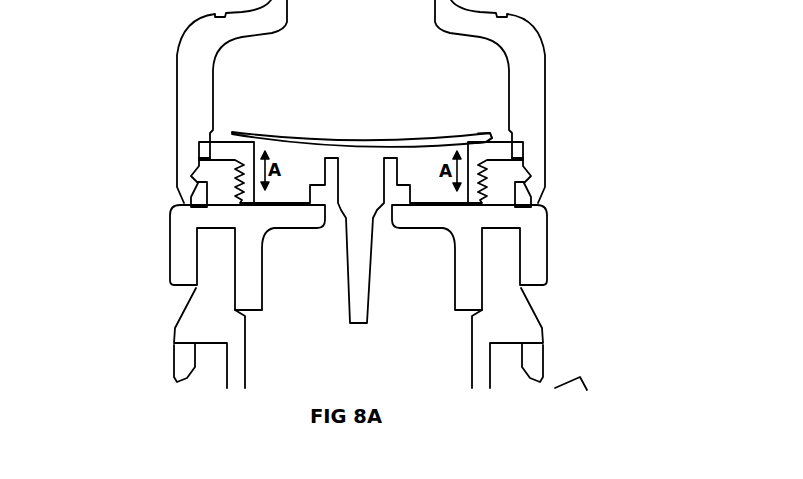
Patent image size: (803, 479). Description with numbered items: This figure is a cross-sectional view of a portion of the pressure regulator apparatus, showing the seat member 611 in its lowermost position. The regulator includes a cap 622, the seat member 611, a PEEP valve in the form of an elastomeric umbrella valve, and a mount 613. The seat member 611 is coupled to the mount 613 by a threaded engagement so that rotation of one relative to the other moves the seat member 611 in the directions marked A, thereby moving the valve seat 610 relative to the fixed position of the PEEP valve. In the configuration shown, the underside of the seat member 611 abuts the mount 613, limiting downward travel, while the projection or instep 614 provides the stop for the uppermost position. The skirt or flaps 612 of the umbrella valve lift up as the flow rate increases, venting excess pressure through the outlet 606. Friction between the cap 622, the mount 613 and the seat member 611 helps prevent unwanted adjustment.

The cap 622 is at (203, 73).
The projection or instep 614 is at (200, 137).
The seat member 611 is at (227, 150).
The skirt or flap(s) of the umbrella valve 612 is at (470, 137).
The valve seat 610 is at (483, 143).
The mount 613 is at (190, 233).
The outlet 606 is at (358, 357).